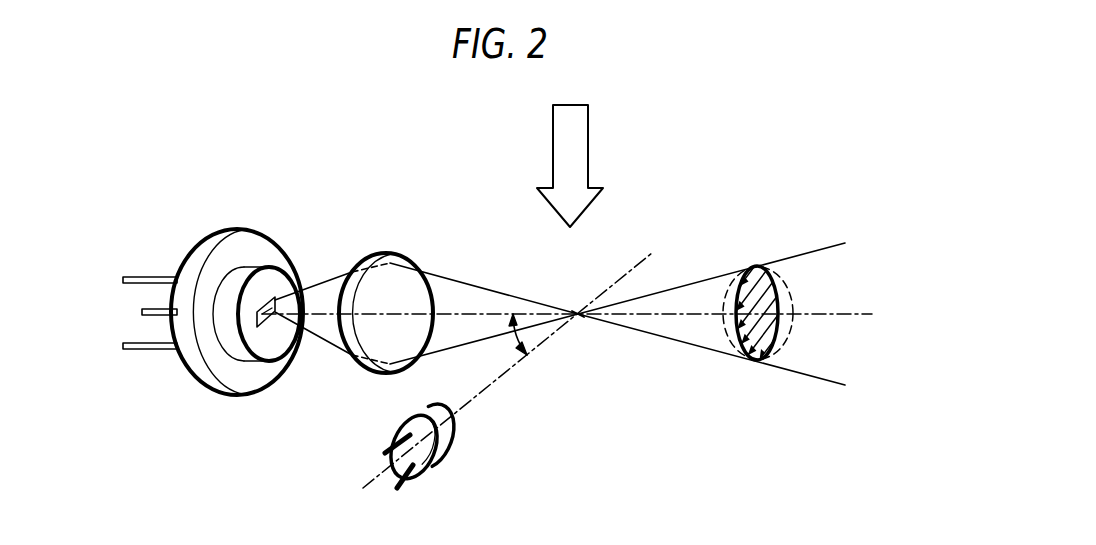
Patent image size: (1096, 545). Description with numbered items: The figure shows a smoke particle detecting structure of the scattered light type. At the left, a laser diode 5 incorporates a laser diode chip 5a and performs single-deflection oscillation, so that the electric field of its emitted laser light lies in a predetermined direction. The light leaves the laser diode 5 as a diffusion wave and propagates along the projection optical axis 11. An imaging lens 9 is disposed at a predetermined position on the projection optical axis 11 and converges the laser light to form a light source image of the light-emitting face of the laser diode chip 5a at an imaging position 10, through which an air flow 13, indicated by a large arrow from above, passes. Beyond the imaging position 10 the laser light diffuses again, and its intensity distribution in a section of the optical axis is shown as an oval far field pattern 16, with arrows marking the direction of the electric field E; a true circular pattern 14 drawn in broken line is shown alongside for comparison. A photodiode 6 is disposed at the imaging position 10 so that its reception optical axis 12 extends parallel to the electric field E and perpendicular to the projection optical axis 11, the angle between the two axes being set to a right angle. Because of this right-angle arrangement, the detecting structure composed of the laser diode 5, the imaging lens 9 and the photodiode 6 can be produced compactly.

The laser diode 5 is at (245, 243).
The laser diode chip 5a is at (267, 325).
The imaging lens 9 is at (389, 252).
The imaging position 10 is at (578, 312).
The projection optical axis 11 is at (821, 310).
The reception optical axis 12 is at (492, 387).
The air flow 13 is at (585, 134).
The true circular pattern 14 is at (725, 347).
The oval far field pattern 16 is at (757, 266).
The photodiode 6 is at (426, 468).
The electric field E is at (763, 362).